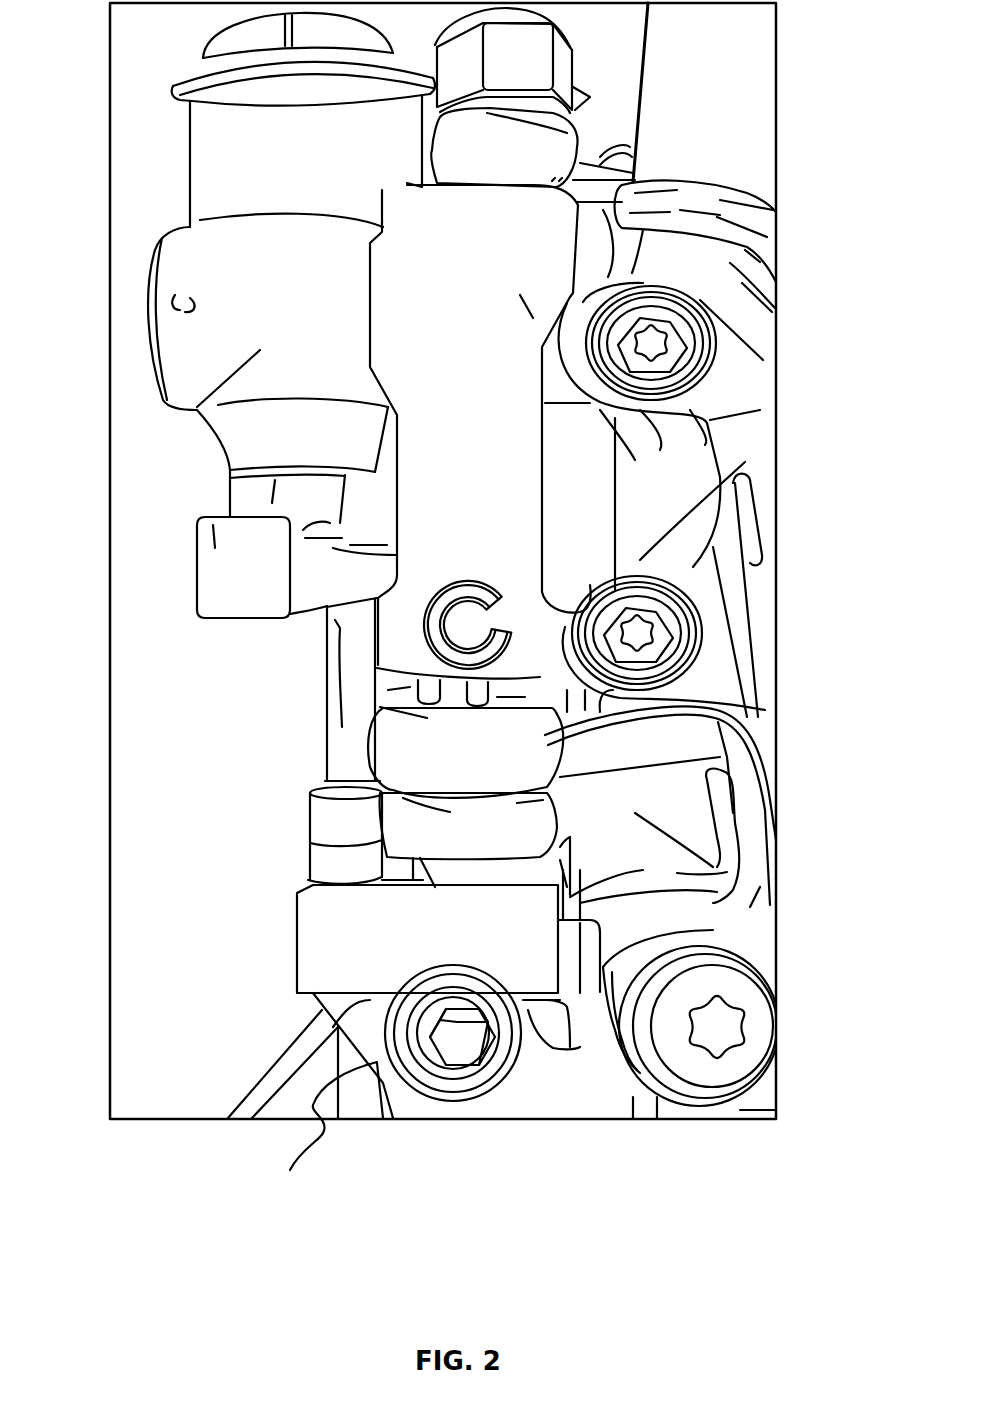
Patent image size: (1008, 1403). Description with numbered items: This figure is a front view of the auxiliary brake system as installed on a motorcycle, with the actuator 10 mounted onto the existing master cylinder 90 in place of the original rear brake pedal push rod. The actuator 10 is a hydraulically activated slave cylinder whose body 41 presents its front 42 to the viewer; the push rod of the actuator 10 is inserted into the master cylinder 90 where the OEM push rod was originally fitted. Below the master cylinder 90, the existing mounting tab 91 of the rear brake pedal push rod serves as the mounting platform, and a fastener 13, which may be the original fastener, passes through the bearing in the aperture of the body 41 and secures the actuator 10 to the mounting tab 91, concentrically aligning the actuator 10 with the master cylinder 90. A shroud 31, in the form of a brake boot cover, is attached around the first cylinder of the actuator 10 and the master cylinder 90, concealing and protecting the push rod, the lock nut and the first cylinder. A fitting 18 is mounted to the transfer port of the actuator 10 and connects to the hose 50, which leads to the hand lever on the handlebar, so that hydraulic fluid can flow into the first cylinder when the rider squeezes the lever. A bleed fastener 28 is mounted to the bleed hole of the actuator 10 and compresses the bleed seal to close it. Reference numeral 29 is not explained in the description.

The actuator 10 is at (452, 1112).
The fastener 13 is at (452, 1048).
The fitting 18 is at (335, 823).
The bleed fastener 28 is at (593, 977).
The bolt 29 is at (563, 980).
The shroud 31 is at (367, 746).
The body 41 is at (330, 940).
The front 42 is at (463, 948).
The hose 50 is at (242, 665).
The master cylinder 90 is at (157, 459).
The mounting tab 91 is at (290, 1170).